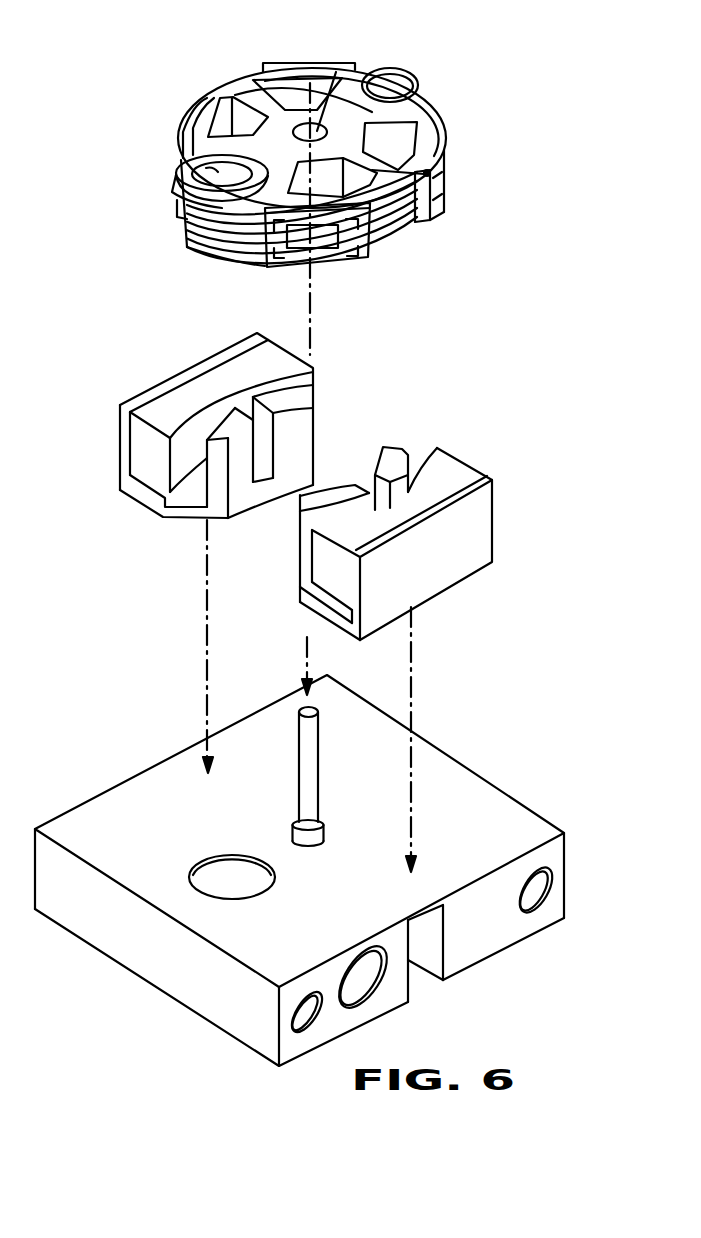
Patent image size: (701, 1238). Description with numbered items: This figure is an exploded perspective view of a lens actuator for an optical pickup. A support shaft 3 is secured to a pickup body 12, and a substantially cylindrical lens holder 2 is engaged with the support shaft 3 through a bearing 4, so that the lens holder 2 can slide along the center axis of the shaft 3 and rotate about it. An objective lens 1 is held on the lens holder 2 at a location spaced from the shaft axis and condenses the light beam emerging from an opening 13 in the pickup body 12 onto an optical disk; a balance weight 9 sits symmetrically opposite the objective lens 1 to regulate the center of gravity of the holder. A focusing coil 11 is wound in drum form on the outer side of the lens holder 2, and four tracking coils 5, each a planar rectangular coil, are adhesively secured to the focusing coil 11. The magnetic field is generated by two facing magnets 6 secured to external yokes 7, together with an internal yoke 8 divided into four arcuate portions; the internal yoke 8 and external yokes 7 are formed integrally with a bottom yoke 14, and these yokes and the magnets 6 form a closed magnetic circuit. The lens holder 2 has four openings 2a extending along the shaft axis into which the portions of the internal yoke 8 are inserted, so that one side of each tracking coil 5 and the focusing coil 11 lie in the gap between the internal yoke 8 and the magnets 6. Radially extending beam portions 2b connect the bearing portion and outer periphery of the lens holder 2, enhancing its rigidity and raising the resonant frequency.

The objective lens 1 is at (185, 175).
The lens holder 2 is at (420, 100).
The openings 2a is at (277, 92).
The beam portions 2b is at (247, 96).
The support shaft 3 is at (318, 752).
The bearing 4 is at (320, 132).
The tracking coils 5 is at (303, 62).
The magnets 6 is at (167, 405).
The external yokes 7 is at (200, 368).
The internal yoke 8 is at (142, 455).
The balance weight 9 is at (392, 84).
The focusing coil 11 is at (193, 245).
The pickup body 12 is at (511, 802).
The opening 13 is at (260, 890).
The bottom yoke 14 is at (145, 500).